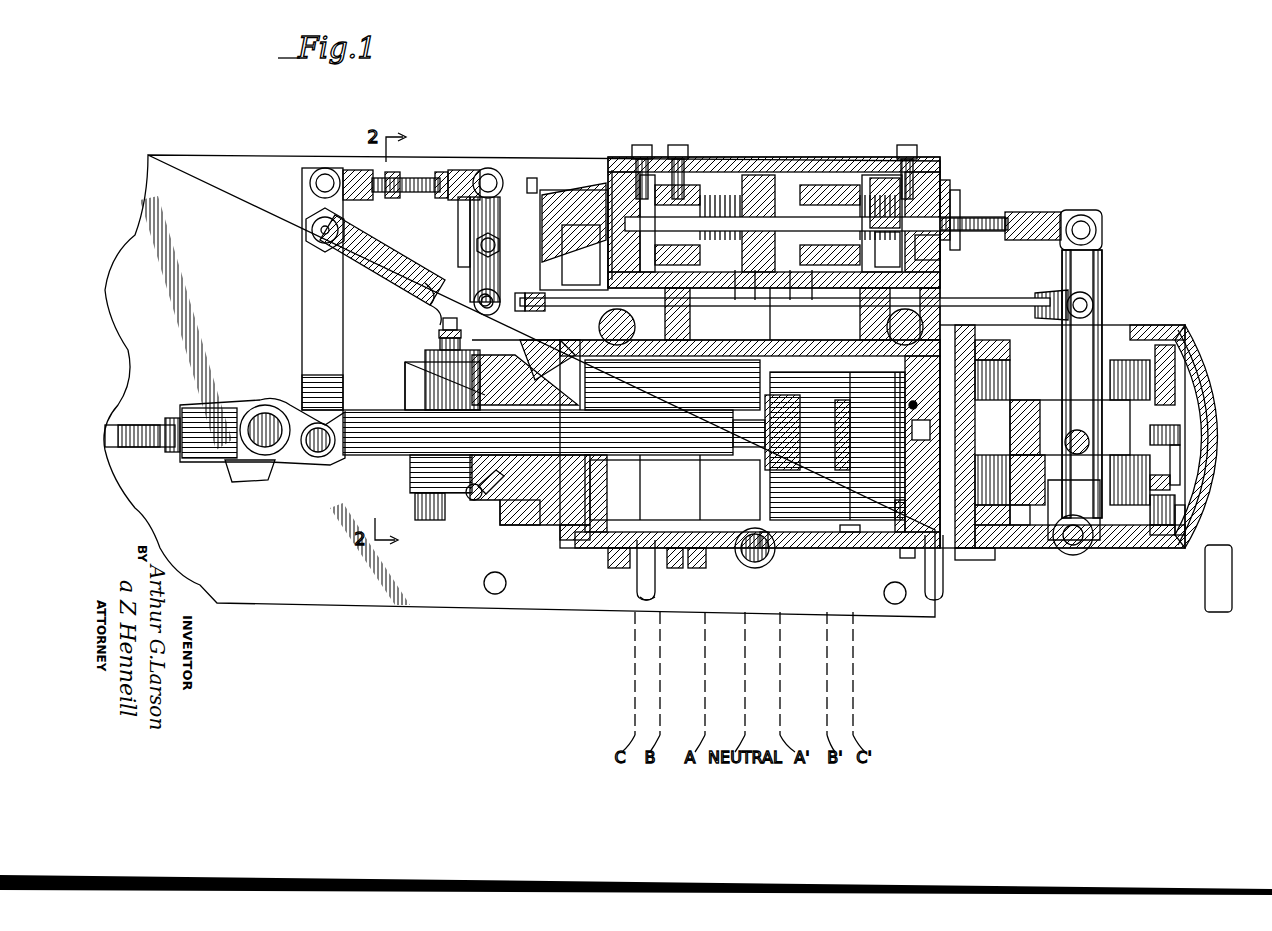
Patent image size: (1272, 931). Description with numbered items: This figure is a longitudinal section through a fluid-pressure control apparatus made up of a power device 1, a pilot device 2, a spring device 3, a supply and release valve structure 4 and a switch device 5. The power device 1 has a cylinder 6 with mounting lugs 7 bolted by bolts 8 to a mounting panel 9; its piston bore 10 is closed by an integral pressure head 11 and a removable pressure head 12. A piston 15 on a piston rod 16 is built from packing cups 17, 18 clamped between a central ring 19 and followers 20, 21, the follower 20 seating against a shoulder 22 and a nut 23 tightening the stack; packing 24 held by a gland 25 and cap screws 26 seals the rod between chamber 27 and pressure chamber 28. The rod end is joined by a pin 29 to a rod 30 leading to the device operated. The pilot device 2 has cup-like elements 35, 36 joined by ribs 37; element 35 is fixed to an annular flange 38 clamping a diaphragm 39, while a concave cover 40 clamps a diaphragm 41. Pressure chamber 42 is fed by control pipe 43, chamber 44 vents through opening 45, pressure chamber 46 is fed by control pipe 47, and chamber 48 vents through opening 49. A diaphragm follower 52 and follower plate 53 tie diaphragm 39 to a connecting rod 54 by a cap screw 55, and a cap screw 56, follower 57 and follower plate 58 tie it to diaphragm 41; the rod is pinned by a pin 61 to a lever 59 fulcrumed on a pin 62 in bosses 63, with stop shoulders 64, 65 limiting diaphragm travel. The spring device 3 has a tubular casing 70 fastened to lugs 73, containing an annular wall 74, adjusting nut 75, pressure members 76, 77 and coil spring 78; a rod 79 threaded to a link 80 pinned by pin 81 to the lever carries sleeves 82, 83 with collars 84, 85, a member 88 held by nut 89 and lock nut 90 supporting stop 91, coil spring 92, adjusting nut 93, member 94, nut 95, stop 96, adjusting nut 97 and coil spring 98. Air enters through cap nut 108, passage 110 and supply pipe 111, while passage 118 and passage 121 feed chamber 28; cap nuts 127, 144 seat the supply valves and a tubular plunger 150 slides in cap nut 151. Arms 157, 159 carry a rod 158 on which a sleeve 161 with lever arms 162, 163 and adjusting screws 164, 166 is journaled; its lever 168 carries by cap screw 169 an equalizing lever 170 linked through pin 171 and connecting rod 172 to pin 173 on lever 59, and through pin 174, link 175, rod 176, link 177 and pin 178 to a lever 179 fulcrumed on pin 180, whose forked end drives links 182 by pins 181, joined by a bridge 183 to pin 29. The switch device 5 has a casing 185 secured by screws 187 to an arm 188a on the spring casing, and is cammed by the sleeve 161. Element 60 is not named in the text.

The power device 1 is at (832, 532).
The pilot device 2 is at (1150, 328).
The spring device 3 is at (790, 160).
The supply and release valve structure 4 is at (405, 368).
The switch device 5 is at (458, 233).
The cylinder 6 is at (770, 306).
The mounting lugs 7 is at (600, 322).
The bolts 8 is at (775, 560).
The mounting panel 9 is at (440, 612).
The piston bore 10 is at (845, 532).
The pressure head 11 is at (895, 470).
The removable pressure head 12 is at (555, 525).
The piston 15 is at (700, 462).
The piston rod 16 is at (640, 458).
The packing cup 17 is at (710, 540).
The packing cup 18 is at (790, 536).
The central ring 19 is at (735, 540).
The follower 20 is at (715, 505).
The follower 21 is at (815, 490).
The shoulder 22 is at (733, 432).
The nut 23 is at (835, 425).
The packing 24 is at (585, 460).
The gland 25 is at (600, 485).
The cap screws 26 is at (548, 520).
The chamber 27 is at (605, 532).
The pressure chamber 28 is at (895, 532).
The pin 29 is at (265, 412).
The rod 30 is at (135, 425).
The cup-like element 35 is at (1015, 548).
The cup-like element 36 is at (1150, 548).
The ribs 37 is at (1100, 548).
The annular flange 38 is at (958, 322).
The flexible diaphragm 39 is at (1010, 362).
The concave cover 40 is at (1225, 400).
The flexible diaphragm 41 is at (1215, 372).
The pressure chamber 42 is at (905, 558).
The control pipe 43 is at (943, 590).
The chamber 44 is at (990, 560).
The opening 45 is at (1040, 500).
The pressure chamber 46 is at (1215, 462).
The control pipe 47 is at (1220, 590).
The chamber 48 is at (1175, 548).
The opening 49 is at (1120, 495).
The diaphragm follower 52 is at (990, 548).
The follower plate 53 is at (900, 490).
The connecting rod 54 is at (1108, 428).
The cap screw 55 is at (912, 440).
The cap screw 56 is at (1205, 445).
The follower 57 is at (1205, 505).
The follower plate 58 is at (1205, 485).
The lever 59 is at (1100, 368).
The pin 60 is at (1065, 432).
The pin 61 is at (1015, 470).
The pin 62 is at (1060, 550).
The bosses 63 is at (1073, 555).
The stop shoulder 64 is at (1010, 385).
The shoulder 65 is at (1105, 392).
The tubular casing 70 is at (757, 160).
The lugs 73 is at (690, 310).
The annular wall 74 is at (850, 175).
The adjusting nut 75 is at (700, 165).
The pressure member 76 is at (818, 185).
The pressure member 77 is at (740, 185).
The coil spring 78 is at (768, 185).
The rod 79 is at (950, 222).
The link 80 is at (1060, 214).
The pin 81 is at (1097, 226).
The sleeve 82 is at (790, 300).
The sleeve 83 is at (755, 300).
The collar 84 is at (812, 300).
The collar 85 is at (735, 300).
The member 88 is at (935, 252).
The nut 89 is at (945, 190).
The lock nut 90 is at (948, 210).
The stop 91 is at (880, 178).
The coil spring 92 is at (842, 165).
The adjusting nut 93 is at (910, 158).
The member 94 is at (614, 165).
The nut 95 is at (608, 240).
The stop 96 is at (672, 145).
The adjusting nut 97 is at (640, 145).
The coil spring 98 is at (712, 178).
The cap nut 108 is at (700, 568).
The passage 110 is at (637, 560).
The fluid pressure supply pipe 111 is at (640, 595).
The passage 118 is at (850, 446).
The passage 121 is at (910, 412).
The cap nut 127 is at (482, 500).
The cap nut 144 is at (418, 518).
The tubular plunger 150 is at (440, 350).
The cap nut 151 is at (540, 360).
The arm 157 is at (405, 400).
The rod 158 is at (475, 378).
The arm 159 is at (440, 342).
The sleeve 161 is at (474, 300).
The lever arm 162 is at (548, 345).
The lever arm 163 is at (365, 290).
The adjusting screw 164 is at (555, 298).
The adjusting screw 166 is at (428, 270).
The lever 168 is at (438, 326).
The cap screw 169 is at (477, 248).
The equalizing lever 170 is at (470, 220).
The pin 171 is at (500, 298).
The connecting rod 172 is at (580, 300).
The pin 173 is at (1098, 307).
The pin 174 is at (497, 172).
The link 175 is at (468, 172).
The rod 176 is at (410, 178).
The link 177 is at (347, 178).
The pin 178 is at (310, 181).
The lever 179 is at (302, 305).
The pin 180 is at (306, 228).
The pins 181 is at (316, 458).
The links 182 is at (295, 470).
The bridge 183 is at (240, 480).
The switch casing 185 is at (452, 172).
The screws 187 is at (538, 200).
The arm 188a is at (580, 185).